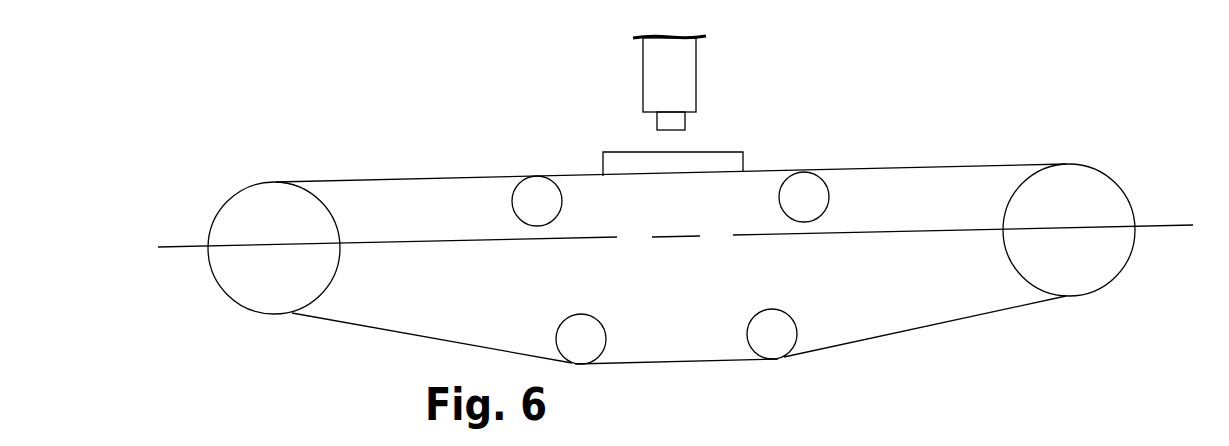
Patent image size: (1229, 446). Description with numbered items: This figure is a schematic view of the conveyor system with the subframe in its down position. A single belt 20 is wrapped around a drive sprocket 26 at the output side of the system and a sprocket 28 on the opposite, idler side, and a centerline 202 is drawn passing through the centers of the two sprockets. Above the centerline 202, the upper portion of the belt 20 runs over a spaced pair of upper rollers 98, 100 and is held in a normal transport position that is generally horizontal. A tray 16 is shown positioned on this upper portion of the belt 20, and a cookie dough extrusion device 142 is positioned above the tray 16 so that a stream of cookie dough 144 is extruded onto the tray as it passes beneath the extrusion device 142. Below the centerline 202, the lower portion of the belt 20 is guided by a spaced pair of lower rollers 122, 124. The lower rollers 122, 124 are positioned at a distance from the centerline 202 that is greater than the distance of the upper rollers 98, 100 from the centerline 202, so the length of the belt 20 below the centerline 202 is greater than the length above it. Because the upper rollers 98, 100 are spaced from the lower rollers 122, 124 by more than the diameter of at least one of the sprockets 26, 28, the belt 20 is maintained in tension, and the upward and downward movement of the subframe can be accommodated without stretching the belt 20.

The tray 16 is at (745, 160).
The belt 20 is at (1012, 163).
The drive sprocket 26 is at (1103, 193).
The sprocket 28 is at (257, 202).
The upper roller 98 is at (537, 190).
The upper roller 100 is at (810, 187).
The lower roller 122 is at (578, 352).
The lower roller 124 is at (773, 347).
The extrusion device 142 is at (693, 72).
The stream of cookie dough 144 is at (677, 123).
The centerline 202 is at (1165, 226).